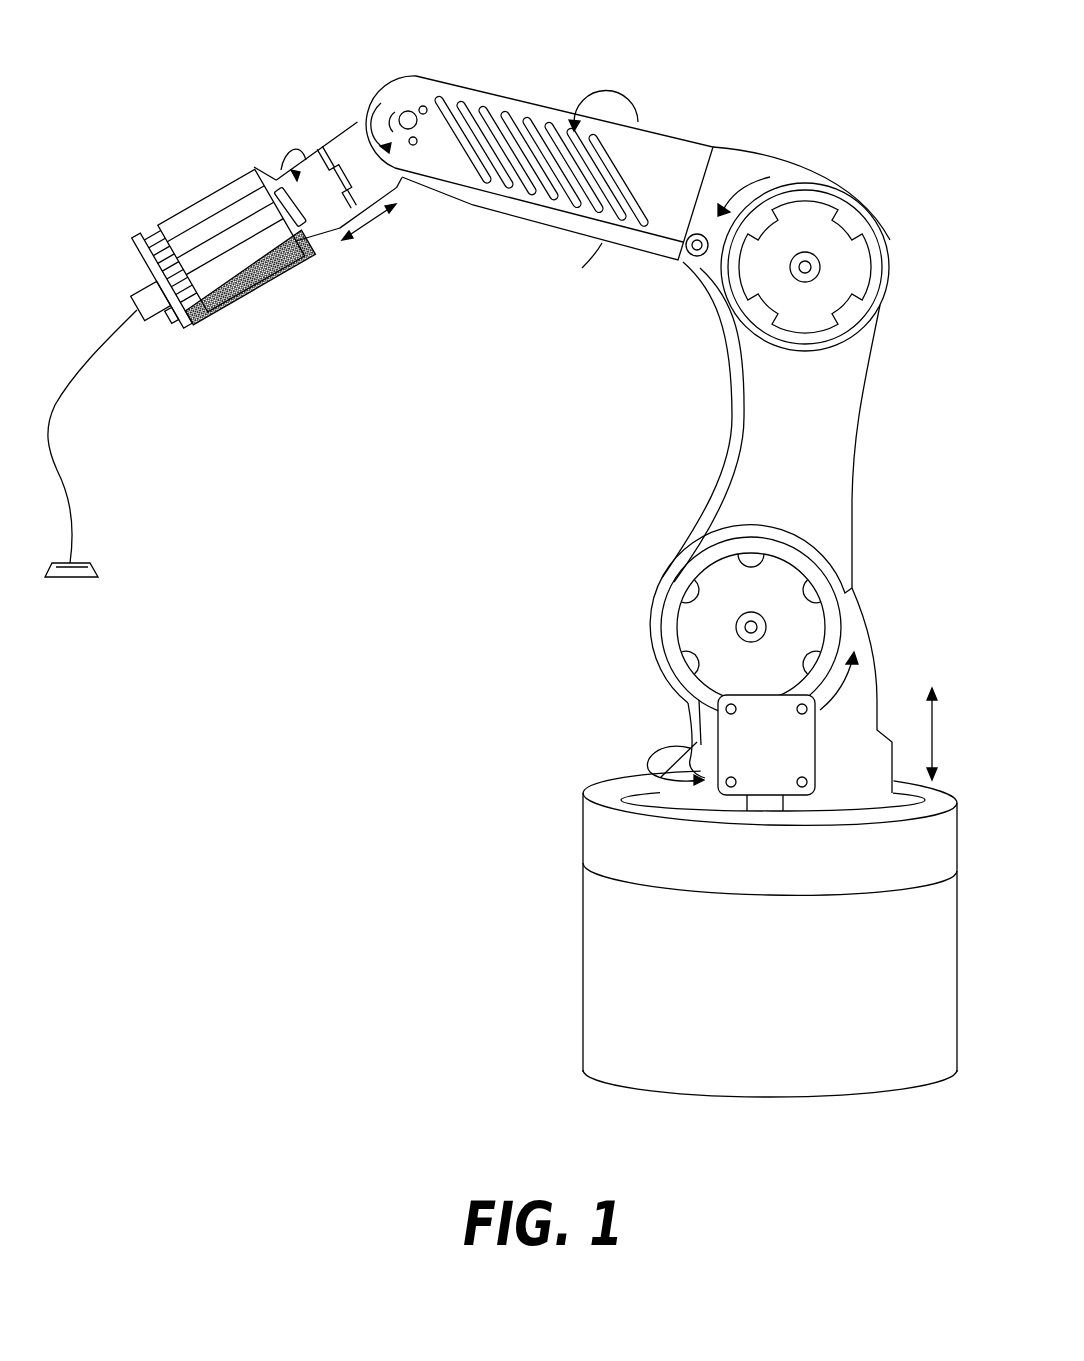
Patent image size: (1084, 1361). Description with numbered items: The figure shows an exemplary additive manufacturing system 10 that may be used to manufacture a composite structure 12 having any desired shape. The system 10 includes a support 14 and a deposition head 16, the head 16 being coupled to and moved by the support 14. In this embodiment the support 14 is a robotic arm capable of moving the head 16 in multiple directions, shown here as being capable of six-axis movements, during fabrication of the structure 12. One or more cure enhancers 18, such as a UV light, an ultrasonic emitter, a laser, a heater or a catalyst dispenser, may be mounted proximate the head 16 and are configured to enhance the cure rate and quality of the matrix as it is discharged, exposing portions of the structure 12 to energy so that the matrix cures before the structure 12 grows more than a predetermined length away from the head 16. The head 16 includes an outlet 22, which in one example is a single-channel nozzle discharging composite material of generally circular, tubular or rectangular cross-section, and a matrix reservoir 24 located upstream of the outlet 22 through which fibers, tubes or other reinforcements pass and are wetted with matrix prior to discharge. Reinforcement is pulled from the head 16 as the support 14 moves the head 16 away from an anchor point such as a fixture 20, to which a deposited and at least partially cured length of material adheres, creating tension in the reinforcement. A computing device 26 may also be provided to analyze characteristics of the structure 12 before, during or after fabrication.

The system 10 is at (399, 822).
The composite structure 12 is at (77, 527).
The support 14 is at (798, 490).
The deposition head 16 is at (168, 348).
The cure enhancer 18 is at (172, 318).
The fixture 20 is at (70, 577).
The outlet 22 is at (150, 293).
The matrix reservoir 24 is at (207, 195).
The computing device 26 is at (779, 753).